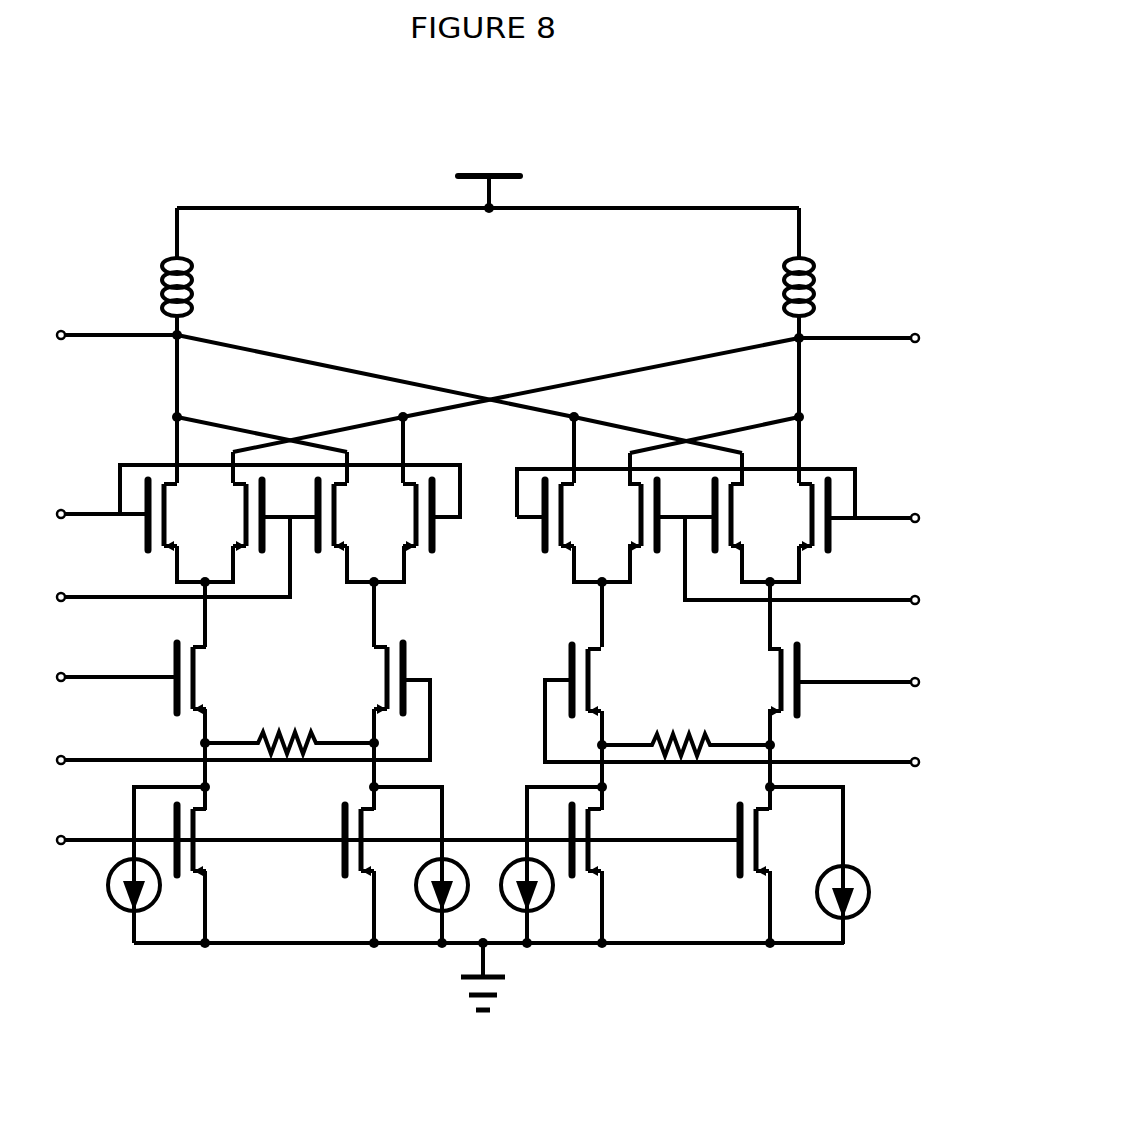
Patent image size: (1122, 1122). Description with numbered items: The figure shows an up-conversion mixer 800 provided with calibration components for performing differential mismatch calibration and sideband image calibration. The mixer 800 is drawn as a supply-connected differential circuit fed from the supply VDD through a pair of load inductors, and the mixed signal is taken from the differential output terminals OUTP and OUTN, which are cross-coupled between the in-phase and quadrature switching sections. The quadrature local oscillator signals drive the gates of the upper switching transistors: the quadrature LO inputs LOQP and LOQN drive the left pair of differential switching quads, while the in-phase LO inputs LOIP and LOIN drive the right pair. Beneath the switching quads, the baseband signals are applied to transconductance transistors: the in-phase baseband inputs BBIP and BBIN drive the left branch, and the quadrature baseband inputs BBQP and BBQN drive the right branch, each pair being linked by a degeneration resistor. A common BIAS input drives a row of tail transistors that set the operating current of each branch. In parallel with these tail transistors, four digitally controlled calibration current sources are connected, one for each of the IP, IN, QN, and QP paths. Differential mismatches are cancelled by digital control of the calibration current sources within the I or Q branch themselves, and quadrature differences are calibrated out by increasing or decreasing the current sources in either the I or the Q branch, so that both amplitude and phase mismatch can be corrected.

The up-conversion mixer 800 is at (742, 160).
The supply voltage terminal VDD is at (495, 159).
The positive output terminal OUTP is at (119, 318).
The negative output terminal OUTN is at (856, 325).
The LO quadrature positive input LOQP is at (256, 508).
The LO quadrature negative input LOQN is at (185, 559).
The LO in-phase positive input LOIP is at (718, 495).
The LO in-phase negative input LOIN is at (788, 560).
The baseband in-phase positive input transistor BBIP is at (131, 670).
The baseband in-phase negative input transistor BBIN is at (243, 703).
The baseband quadrature positive input transistor BBQP is at (843, 675).
The baseband quadrature negative input transistor BBQN is at (732, 705).
The bias input and bias transistors BIAS is at (410, 833).